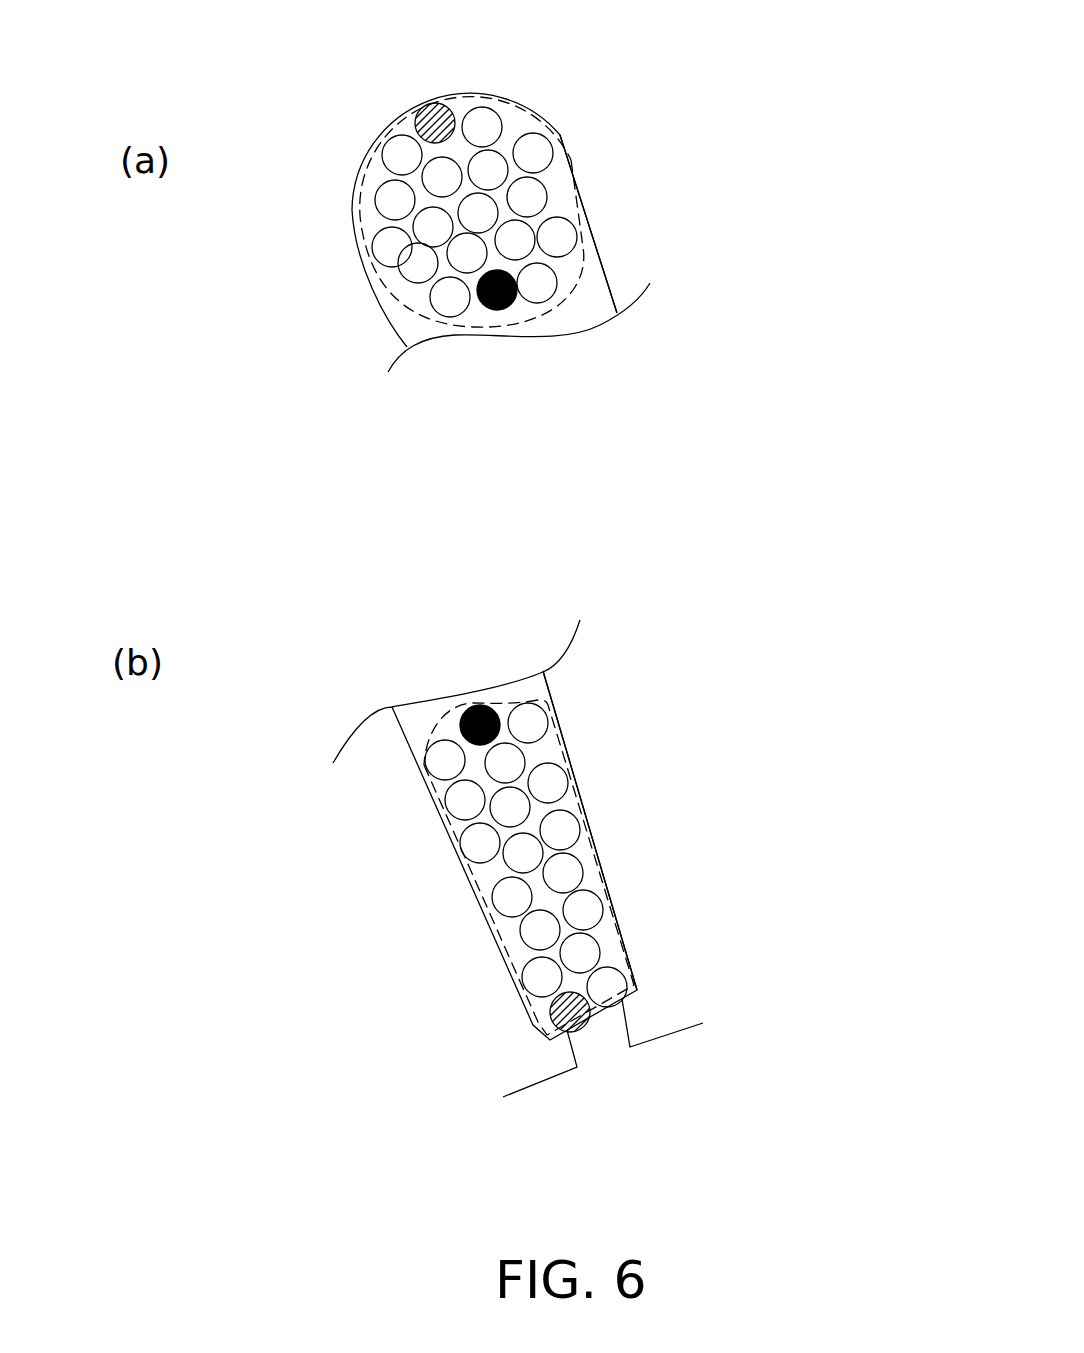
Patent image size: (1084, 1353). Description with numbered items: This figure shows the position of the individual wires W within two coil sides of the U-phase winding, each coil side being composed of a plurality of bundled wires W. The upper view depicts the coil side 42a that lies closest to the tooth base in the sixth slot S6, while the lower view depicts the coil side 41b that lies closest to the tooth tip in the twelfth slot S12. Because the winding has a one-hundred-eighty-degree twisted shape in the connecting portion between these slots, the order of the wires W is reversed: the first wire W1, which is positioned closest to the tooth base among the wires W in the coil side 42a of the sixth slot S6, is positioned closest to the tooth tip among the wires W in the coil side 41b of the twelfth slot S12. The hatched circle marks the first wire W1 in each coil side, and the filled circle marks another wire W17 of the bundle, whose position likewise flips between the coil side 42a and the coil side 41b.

The wire W is at (483, 118).
The first wire W1 is at (433, 117).
The seventeenth substrate W17 is at (503, 312).
The coil side 42a is at (570, 170).
The coil side 41b is at (427, 737).
The sixth slot S6 is at (603, 257).
The twelfth slot S12 is at (550, 682).